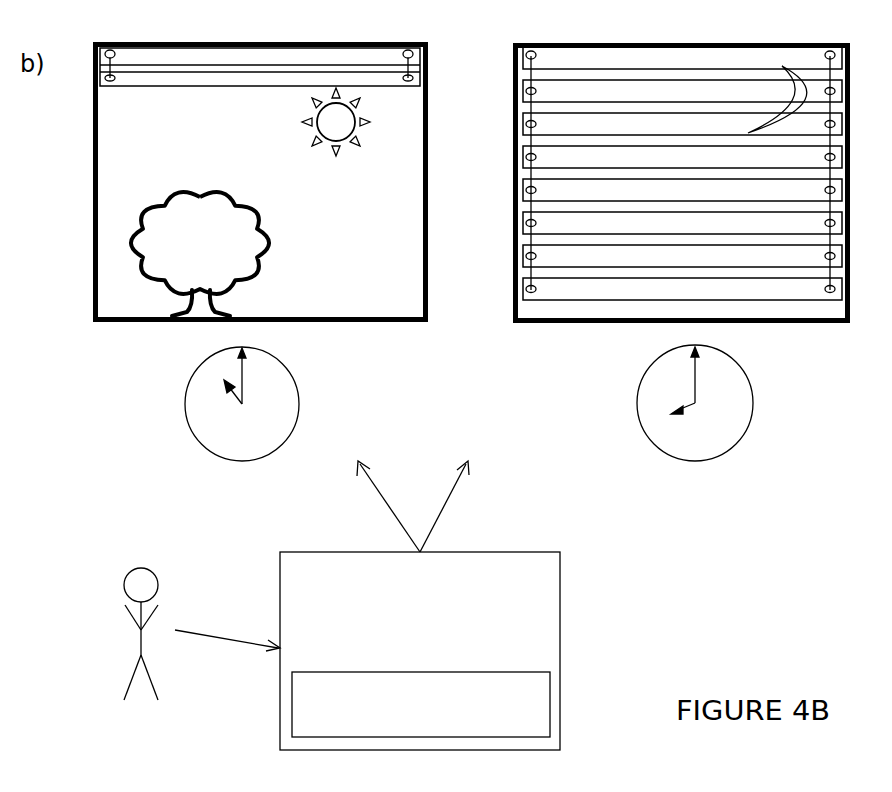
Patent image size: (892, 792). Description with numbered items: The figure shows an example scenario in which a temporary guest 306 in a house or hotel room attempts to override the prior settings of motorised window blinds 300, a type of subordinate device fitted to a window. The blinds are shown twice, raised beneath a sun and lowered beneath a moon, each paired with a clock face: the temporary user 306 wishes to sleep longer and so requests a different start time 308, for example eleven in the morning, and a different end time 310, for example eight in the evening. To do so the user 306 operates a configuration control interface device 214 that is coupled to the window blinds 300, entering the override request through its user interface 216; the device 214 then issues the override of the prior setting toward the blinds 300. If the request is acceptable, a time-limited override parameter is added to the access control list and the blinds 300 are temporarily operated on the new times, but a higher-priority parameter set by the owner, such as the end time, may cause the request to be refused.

The motorised window blinds 300 is at (115, 85).
The temporary guest 306 is at (199, 656).
The different start time 308 is at (193, 440).
The different end time 310 is at (725, 452).
The configuration control interface device 214 is at (497, 605).
The user interface 216 is at (421, 704).